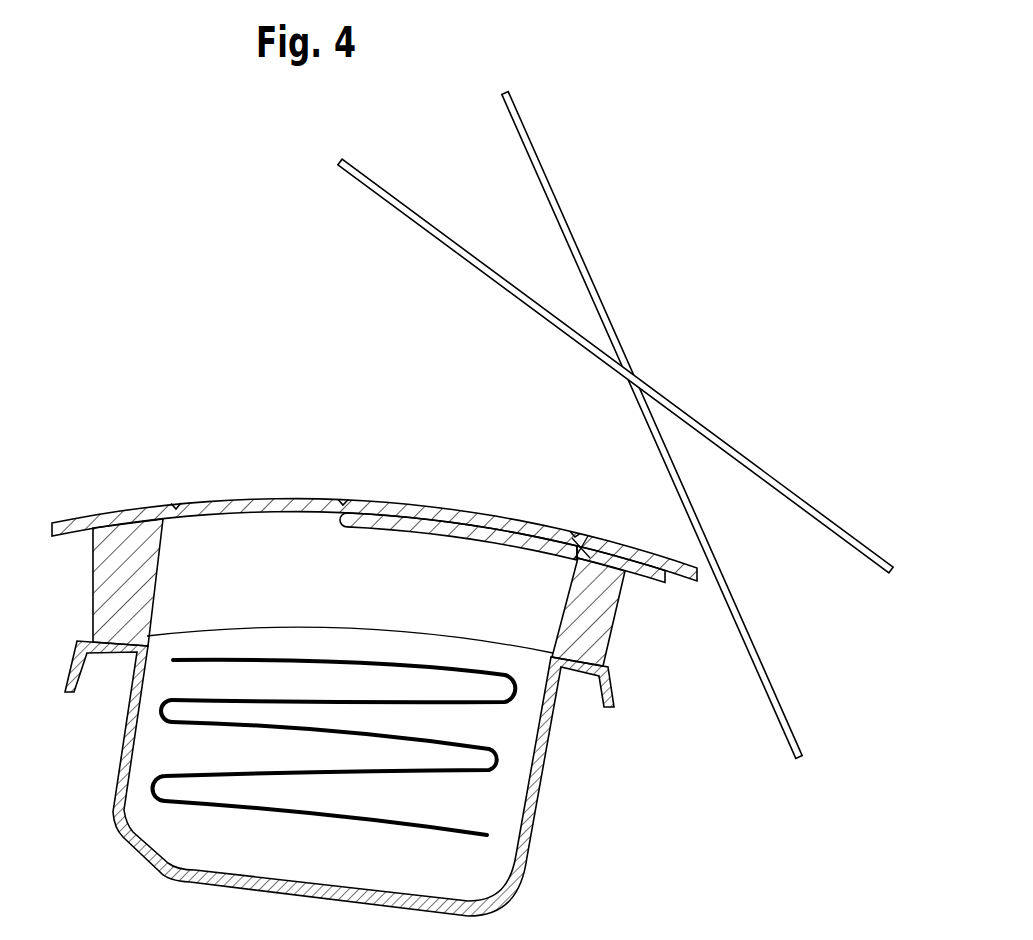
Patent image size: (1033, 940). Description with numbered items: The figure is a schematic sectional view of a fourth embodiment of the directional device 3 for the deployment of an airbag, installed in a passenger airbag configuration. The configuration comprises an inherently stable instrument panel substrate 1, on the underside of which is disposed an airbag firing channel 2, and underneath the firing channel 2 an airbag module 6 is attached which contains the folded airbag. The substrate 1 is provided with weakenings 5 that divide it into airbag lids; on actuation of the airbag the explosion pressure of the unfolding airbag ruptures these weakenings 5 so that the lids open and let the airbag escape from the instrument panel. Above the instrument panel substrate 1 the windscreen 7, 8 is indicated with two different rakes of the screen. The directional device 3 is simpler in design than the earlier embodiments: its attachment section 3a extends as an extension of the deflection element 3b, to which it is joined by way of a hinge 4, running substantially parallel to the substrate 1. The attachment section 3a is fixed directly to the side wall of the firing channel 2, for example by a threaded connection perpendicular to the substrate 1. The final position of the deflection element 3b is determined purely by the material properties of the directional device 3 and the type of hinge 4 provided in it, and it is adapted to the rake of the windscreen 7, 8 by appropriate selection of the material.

The instrument panel substrate 1 is at (112, 517).
The airbag firing channel 2 is at (103, 607).
The directional device 3 is at (512, 582).
The attachment section 3a is at (658, 583).
The deflection element 3b is at (383, 533).
The hinge 4 is at (582, 545).
The weakenings 5 is at (183, 508).
The airbag module 6 is at (132, 853).
The windscreen 7 is at (403, 208).
The windscreen 8 is at (548, 180).